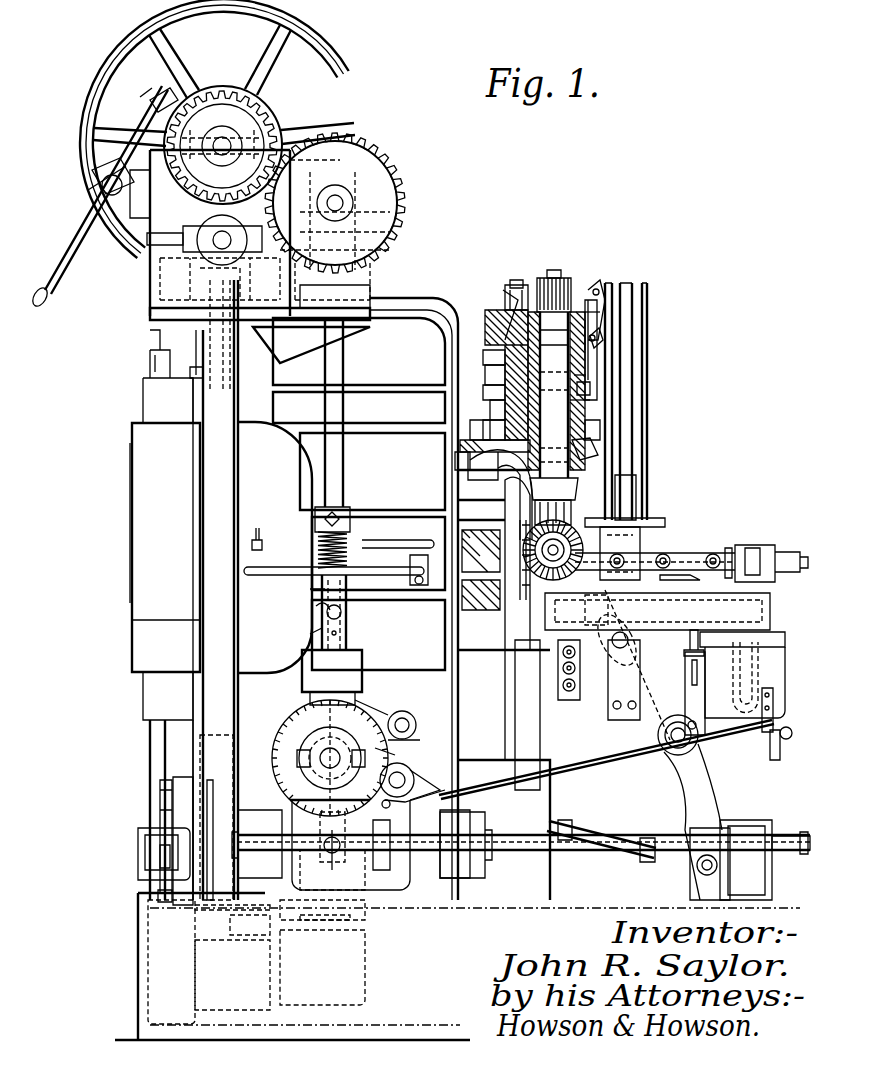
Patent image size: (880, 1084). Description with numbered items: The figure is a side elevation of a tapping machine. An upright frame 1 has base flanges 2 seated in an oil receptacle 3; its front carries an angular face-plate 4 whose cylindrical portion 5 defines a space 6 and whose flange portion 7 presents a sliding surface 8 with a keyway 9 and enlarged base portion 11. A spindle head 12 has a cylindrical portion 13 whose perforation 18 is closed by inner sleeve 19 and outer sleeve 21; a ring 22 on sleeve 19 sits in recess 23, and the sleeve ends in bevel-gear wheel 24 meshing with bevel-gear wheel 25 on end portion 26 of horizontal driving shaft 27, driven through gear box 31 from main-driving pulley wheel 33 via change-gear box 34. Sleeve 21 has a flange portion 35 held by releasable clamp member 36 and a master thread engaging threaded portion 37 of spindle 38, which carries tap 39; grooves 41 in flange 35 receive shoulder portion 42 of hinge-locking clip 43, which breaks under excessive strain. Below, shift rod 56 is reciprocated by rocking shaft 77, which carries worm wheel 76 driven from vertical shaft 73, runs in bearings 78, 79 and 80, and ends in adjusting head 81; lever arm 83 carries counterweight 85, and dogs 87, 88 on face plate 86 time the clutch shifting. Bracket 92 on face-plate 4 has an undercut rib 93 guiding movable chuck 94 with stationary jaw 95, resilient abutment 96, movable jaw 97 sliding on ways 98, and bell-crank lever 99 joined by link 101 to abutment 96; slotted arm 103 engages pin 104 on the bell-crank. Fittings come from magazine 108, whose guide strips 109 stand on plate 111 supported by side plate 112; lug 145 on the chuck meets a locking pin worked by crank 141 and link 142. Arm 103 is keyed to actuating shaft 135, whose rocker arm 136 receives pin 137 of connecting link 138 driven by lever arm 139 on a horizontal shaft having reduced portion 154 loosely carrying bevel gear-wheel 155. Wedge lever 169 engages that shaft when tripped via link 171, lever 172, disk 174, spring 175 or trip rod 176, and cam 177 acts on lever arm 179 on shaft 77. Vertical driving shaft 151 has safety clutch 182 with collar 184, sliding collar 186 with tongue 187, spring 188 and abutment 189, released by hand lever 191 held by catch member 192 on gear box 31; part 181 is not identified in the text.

The frame 1 is at (437, 322).
The base flanges 2 is at (308, 1025).
The receptacle 3 is at (136, 906).
The angular face-plate 4 is at (490, 398).
The cylindrical portion 5 is at (495, 460).
The space 6 is at (501, 495).
The flange portion 7 is at (488, 332).
The sliding surface 8 is at (500, 304).
The keyway 9 is at (485, 370).
The enlarged base portion 11 is at (480, 418).
The spindle heads 12 is at (586, 403).
The cylindrical portion 13 is at (600, 432).
The perforations 18 is at (602, 341).
The inner sleeve 19 is at (590, 410).
The outer sleeve 21 is at (598, 322).
The ring 22 is at (590, 388).
The recess 23 is at (586, 376).
The bevel-gear wheel 24 is at (598, 448).
The bevel-gear wheel 25 is at (458, 458).
The end portion 26 is at (481, 551).
The driving shaft 27 is at (496, 563).
The gear box 31 is at (280, 428).
The main-driving pulley wheel 33 is at (322, 42).
The change-gear box 34 is at (221, 153).
The flange portion 35 is at (505, 296).
The releasable clamp member 36 is at (505, 286).
The threaded portion 37 is at (555, 270).
The spindle 38 is at (570, 469).
The tap 39 is at (560, 540).
The grooves 41 is at (590, 300).
The shoulder portion 42 is at (598, 280).
The hinge-locking clip 43 is at (605, 278).
The shift rod 56 is at (150, 730).
The vertically-positioned shaft 73 is at (205, 742).
The worm wheel 76 is at (212, 778).
The horizontally-extending shaft 77 is at (518, 850).
The bearing 78 is at (262, 870).
The bearing 79 is at (470, 872).
The bearing 80 is at (762, 820).
The adjusting head 81 is at (790, 852).
The lever arm 83 is at (158, 866).
The counter weight 85 is at (138, 830).
The face plate 86 is at (185, 777).
The dog 87 is at (162, 904).
The dog 88 is at (160, 782).
The bracket 92 is at (778, 668).
The undercut rib 93 is at (560, 640).
The movable chuck 94 is at (760, 608).
The stationary jaw 95 is at (515, 535).
The resilient abutment construction 96 is at (771, 554).
The movable jaw 97 is at (655, 557).
The ways 98 is at (663, 582).
The bell-crank lever 99 is at (640, 553).
The link 101 is at (700, 560).
The slotted arm 103 is at (598, 680).
The pin 104 is at (630, 618).
The work magazine 108 is at (636, 497).
The guide strips 109 is at (625, 284).
The plate 111 is at (666, 520).
The side plate 112 is at (641, 534).
The actuating shaft 135 is at (679, 746).
The arm 136 is at (700, 769).
The pin 137 is at (688, 875).
The connecting link 138 is at (560, 822).
The lever arm 139 is at (405, 765).
The crank 141 is at (690, 722).
The link 142 is at (707, 695).
The lug 145 is at (698, 630).
The vertical driving shaft 151 is at (344, 359).
The reduced end portion 154 is at (300, 700).
The bevel gear-wheel 155 is at (300, 730).
The wedge lever 169 is at (405, 712).
The trip lever 171 is at (408, 806).
The lever 172 is at (445, 870).
The disk 174 is at (407, 739).
The spring 175 is at (371, 839).
The trip rod 176 is at (624, 768).
The cam 177 is at (300, 770).
The lever arm 179 is at (348, 868).
The bearing 181 is at (297, 755).
The safety clutch 182 is at (342, 610).
The collar 184 is at (348, 630).
The clutch collar 186 is at (300, 611).
The tongue portion 187 is at (316, 606).
The spring 188 is at (350, 540).
The abutment 189 is at (348, 505).
The hand lever 191 is at (274, 568).
The catch member 192 is at (256, 540).